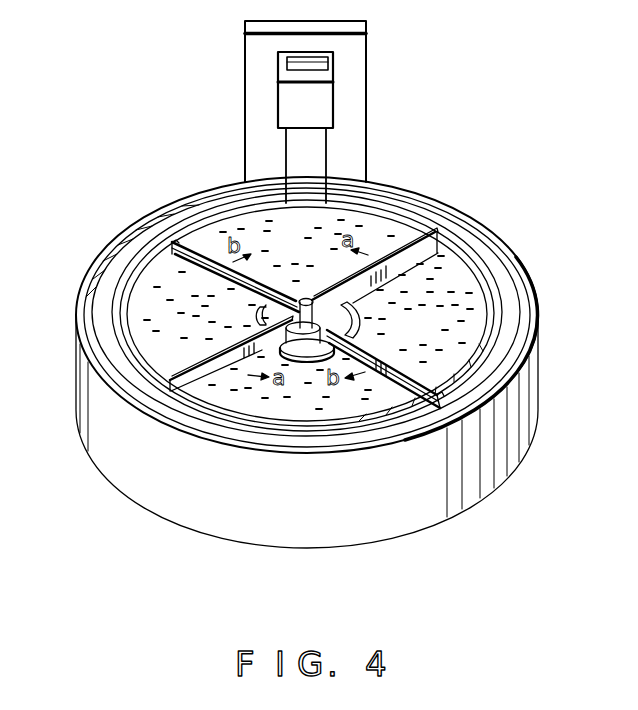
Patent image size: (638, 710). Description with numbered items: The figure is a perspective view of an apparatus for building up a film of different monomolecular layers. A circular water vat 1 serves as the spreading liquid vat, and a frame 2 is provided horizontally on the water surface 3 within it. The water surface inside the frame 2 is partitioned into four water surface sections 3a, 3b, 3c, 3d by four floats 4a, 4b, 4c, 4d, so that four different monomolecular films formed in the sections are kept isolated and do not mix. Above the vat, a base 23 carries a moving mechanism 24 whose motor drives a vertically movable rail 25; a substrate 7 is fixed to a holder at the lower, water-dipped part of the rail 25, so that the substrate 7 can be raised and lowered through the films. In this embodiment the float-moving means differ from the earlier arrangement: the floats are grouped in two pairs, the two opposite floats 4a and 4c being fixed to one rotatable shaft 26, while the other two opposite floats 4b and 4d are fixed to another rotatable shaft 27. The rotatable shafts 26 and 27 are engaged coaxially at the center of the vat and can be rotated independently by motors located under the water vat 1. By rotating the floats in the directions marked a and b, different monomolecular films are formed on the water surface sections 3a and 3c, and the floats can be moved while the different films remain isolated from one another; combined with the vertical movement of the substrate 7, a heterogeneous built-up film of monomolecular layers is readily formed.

The circular water vat 1 is at (542, 377).
The frame 2 is at (495, 307).
The water surface 3 is at (510, 333).
The water surface section 3a is at (385, 235).
The water surface section 3b is at (448, 287).
The water surface section 3c is at (320, 403).
The water surface section 3d is at (147, 290).
The float 4a is at (430, 230).
The float 4b is at (415, 390).
The float 4c is at (198, 378).
The float 4d is at (173, 243).
The substrate 7 is at (348, 210).
The base 23 is at (373, 58).
The moving mechanism 24 is at (283, 95).
The vertically movable rail 25 is at (297, 152).
The rotatable shaft 26 is at (302, 300).
The rotatable shaft 27 is at (350, 317).